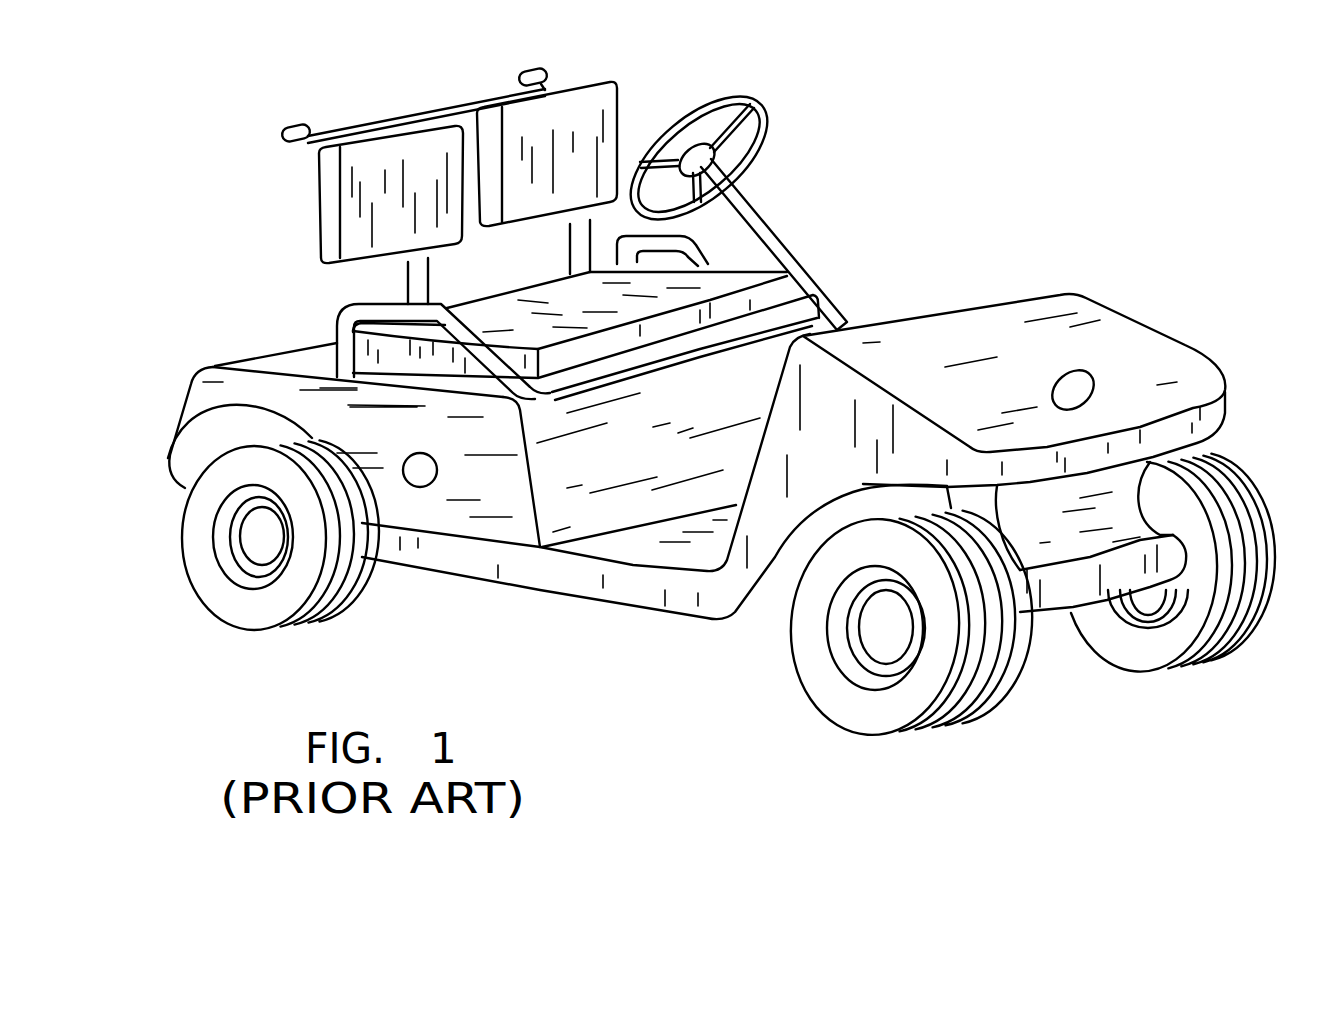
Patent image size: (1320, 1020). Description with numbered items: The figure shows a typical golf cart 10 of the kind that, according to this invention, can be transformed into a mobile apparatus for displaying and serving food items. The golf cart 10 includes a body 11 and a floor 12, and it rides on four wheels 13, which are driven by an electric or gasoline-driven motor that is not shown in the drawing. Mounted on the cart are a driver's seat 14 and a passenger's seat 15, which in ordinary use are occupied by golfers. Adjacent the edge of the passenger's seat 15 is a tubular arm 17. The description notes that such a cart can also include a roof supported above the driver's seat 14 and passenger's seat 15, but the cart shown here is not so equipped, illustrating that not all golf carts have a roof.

The golf cart 10 is at (206, 183).
The body 11 is at (192, 396).
The floor 12 is at (640, 540).
The wheels 13 is at (210, 573).
The driver's seat 14 is at (697, 282).
The passenger's seat 15 is at (500, 320).
The tubular arm 17 is at (343, 336).